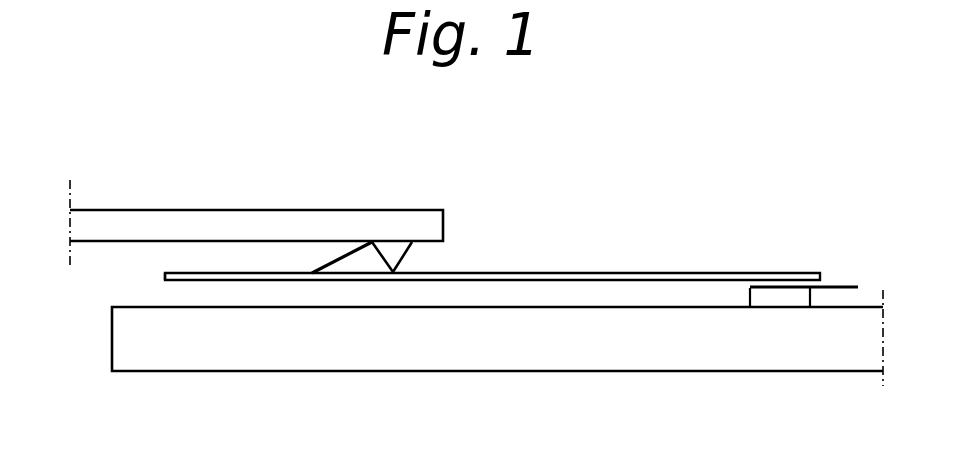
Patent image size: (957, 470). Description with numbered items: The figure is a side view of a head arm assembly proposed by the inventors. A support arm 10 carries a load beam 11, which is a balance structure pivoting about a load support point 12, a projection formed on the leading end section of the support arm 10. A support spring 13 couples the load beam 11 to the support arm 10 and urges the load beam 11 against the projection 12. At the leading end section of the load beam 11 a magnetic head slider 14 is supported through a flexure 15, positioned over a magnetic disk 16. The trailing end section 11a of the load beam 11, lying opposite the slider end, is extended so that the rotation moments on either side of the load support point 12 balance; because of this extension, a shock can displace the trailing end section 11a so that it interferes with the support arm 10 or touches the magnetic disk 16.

The support arm 10 is at (233, 221).
The load beam 11 is at (528, 281).
The trailing end section 11a is at (165, 275).
The load support point 12 is at (400, 253).
The support spring 13 is at (345, 246).
The magnetic head slider 14 is at (813, 302).
The flexure 15 is at (843, 287).
The magnetic disk 16 is at (717, 352).